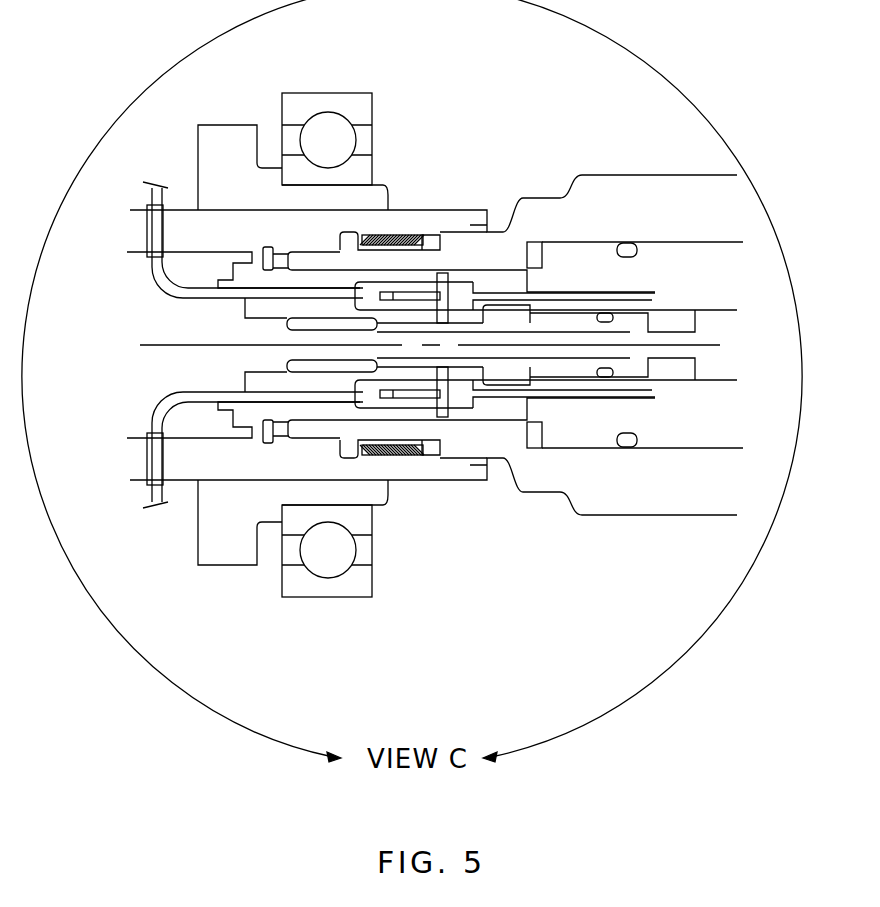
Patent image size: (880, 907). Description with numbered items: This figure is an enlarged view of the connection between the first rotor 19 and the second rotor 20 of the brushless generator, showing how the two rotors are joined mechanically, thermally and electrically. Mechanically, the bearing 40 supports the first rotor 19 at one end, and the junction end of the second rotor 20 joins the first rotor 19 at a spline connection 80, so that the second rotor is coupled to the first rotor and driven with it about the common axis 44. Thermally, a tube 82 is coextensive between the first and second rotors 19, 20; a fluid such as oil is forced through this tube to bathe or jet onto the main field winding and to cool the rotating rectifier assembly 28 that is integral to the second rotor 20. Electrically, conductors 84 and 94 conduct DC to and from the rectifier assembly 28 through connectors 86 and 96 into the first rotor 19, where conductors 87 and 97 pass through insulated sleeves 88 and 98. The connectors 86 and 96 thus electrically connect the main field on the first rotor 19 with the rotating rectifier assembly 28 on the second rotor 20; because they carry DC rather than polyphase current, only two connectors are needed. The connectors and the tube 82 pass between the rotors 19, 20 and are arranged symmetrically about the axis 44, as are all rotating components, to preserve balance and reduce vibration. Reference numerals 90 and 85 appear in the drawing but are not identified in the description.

The upper support block 90 is at (227, 125).
The bearing 40 is at (326, 93).
The insulated sleeve 88 is at (146, 228).
The conductor 87 is at (177, 255).
The spline connection 80 is at (388, 232).
The connector 86 is at (428, 282).
The housing middle section 85 is at (488, 275).
The conductor 84 is at (513, 293).
The common axis 44 is at (703, 347).
The first rotor 19 is at (185, 485).
The insulated sleeve 98 is at (146, 450).
The conductor 97 is at (163, 396).
The connector 96 is at (430, 407).
The conductor 94 is at (500, 400).
The tube 82 is at (610, 353).
The second rotor 20 is at (660, 518).
The rotating rectifier assembly 28 is at (712, 385).